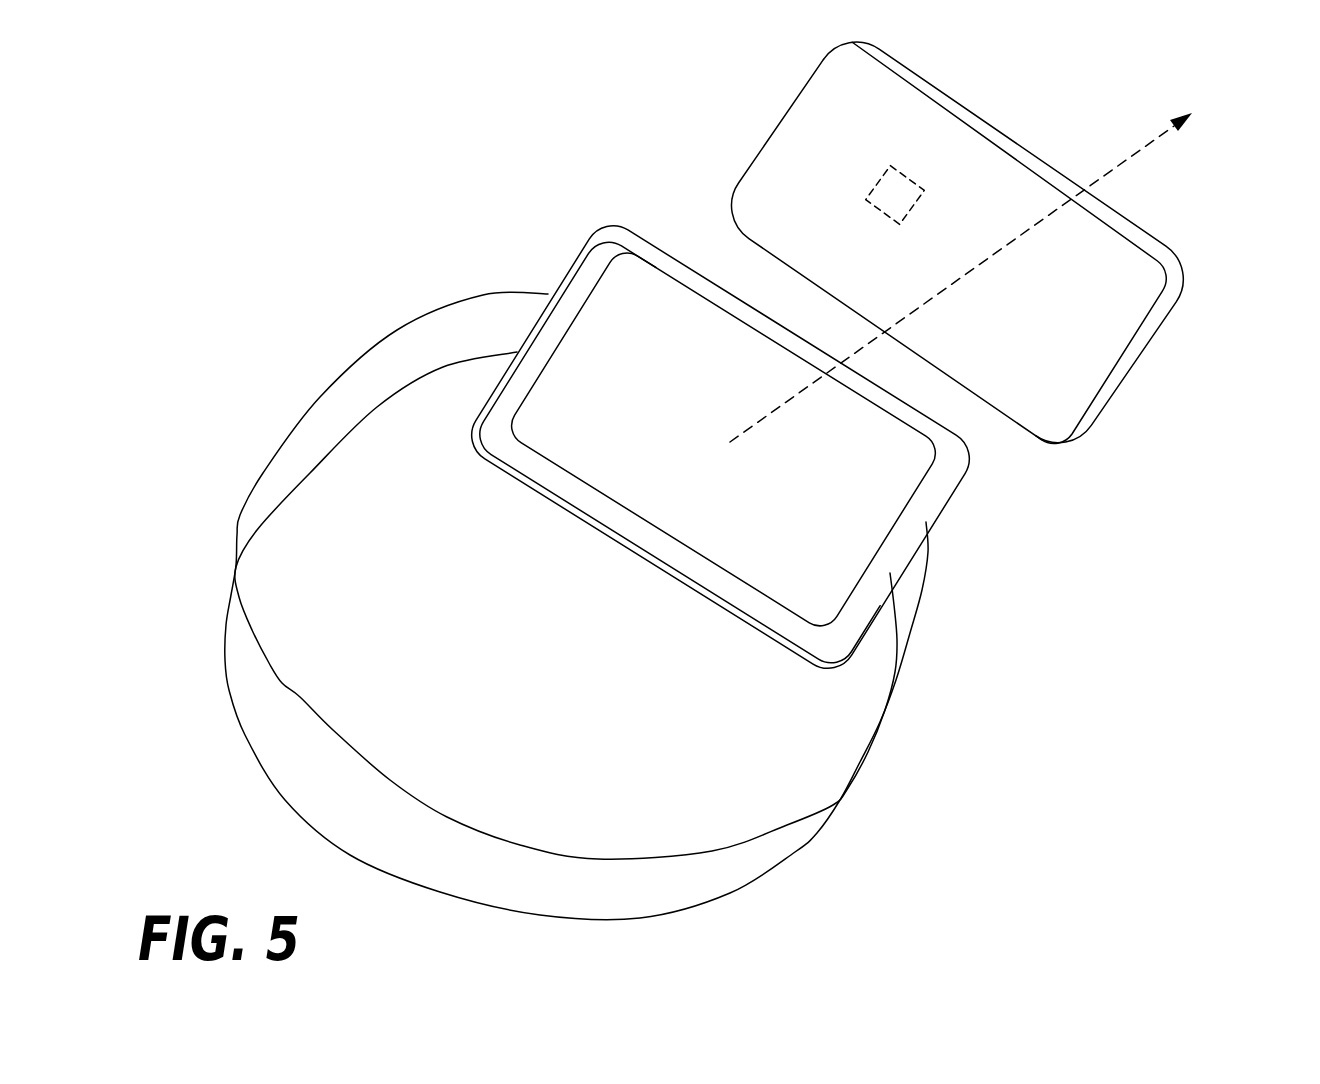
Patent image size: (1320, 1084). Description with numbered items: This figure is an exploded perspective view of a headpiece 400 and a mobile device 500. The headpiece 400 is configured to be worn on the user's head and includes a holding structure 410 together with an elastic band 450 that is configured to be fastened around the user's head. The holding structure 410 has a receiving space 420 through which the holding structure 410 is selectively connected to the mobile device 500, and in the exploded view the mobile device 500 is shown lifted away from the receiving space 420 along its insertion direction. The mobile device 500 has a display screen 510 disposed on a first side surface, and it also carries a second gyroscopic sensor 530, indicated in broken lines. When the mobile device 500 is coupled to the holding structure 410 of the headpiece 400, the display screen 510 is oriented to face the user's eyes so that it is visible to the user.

The headpiece 400 is at (773, 447).
The holding structure 410 is at (938, 488).
The receiving space 420 is at (779, 467).
The elastic band 450 is at (813, 829).
The mobile device 500 is at (962, 242).
The display screen 510 is at (1072, 277).
The second gyroscopic sensor 530 is at (870, 198).